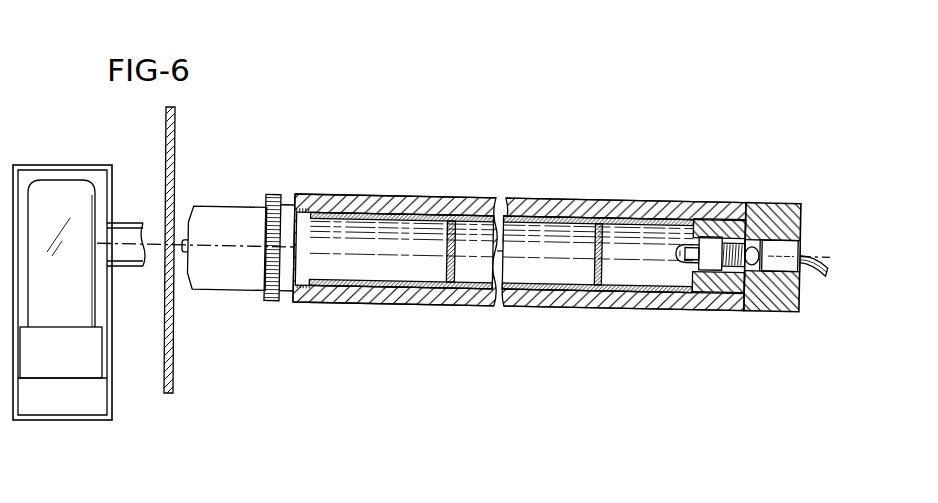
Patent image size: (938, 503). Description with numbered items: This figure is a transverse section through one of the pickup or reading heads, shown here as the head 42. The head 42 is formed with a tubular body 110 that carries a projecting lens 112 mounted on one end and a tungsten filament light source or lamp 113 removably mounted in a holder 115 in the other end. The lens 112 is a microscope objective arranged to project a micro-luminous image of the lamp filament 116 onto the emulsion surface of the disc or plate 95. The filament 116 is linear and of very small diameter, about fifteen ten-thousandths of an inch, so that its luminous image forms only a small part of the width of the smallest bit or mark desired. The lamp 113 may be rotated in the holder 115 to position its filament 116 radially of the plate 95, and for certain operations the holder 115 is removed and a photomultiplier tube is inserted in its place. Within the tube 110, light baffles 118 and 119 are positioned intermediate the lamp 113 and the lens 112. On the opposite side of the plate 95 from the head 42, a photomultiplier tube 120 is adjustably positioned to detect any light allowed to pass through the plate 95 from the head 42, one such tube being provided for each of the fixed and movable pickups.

The photomultiplier tube 120 is at (56, 188).
The plate 95 is at (177, 121).
The lens 112 is at (223, 213).
The reading head 42 is at (404, 194).
The tubular body 110 is at (520, 207).
The light baffle 118 is at (448, 272).
The light baffle 119 is at (604, 273).
The lamp filament 116 is at (686, 253).
The lamp 113 is at (710, 266).
The holder 115 is at (773, 210).